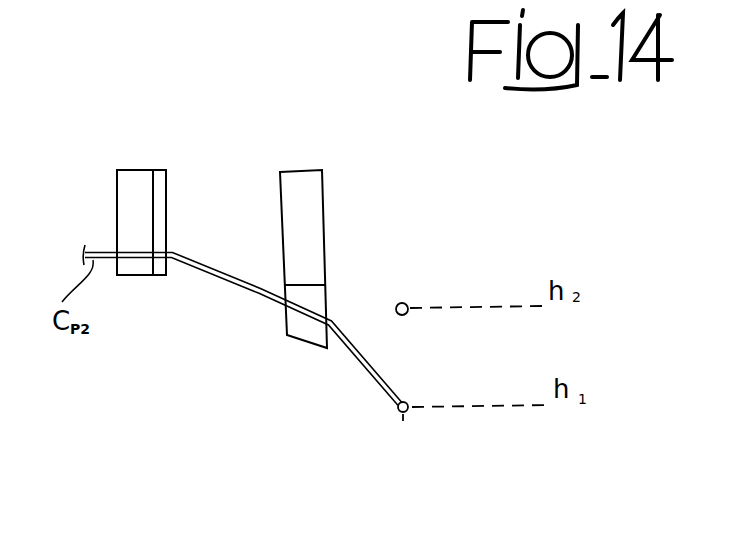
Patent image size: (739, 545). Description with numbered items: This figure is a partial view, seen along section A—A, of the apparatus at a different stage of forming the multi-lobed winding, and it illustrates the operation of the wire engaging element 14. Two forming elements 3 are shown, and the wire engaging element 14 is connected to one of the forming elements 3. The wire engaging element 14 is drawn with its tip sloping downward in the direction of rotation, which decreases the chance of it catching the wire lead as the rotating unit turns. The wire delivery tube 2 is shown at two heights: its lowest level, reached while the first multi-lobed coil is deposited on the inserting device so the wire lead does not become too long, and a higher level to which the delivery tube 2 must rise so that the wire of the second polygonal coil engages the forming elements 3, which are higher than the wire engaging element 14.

The wire delivery tube 2 is at (397, 305).
The forming element 3 is at (150, 208).
The wire engaging element 14 is at (300, 343).